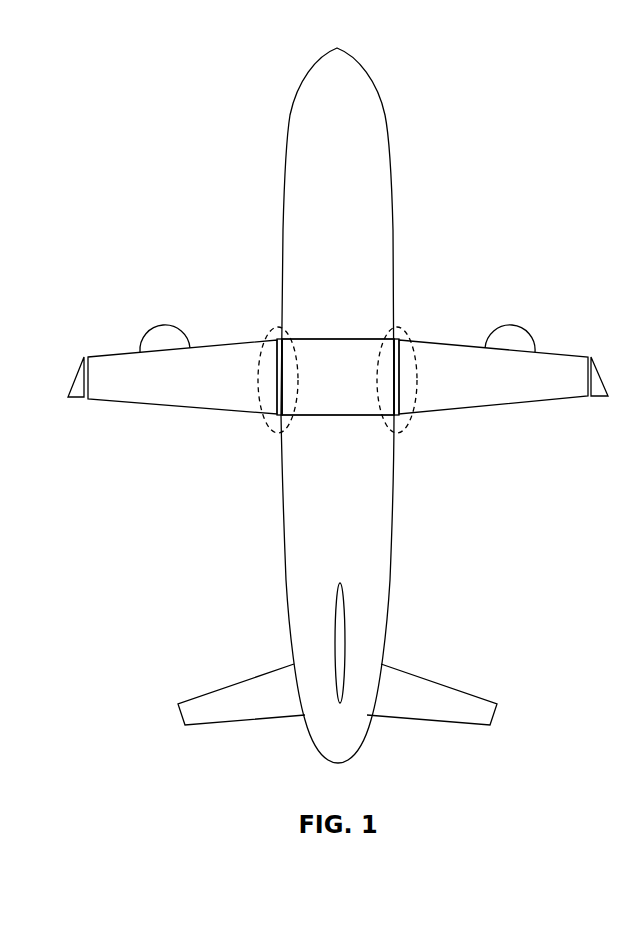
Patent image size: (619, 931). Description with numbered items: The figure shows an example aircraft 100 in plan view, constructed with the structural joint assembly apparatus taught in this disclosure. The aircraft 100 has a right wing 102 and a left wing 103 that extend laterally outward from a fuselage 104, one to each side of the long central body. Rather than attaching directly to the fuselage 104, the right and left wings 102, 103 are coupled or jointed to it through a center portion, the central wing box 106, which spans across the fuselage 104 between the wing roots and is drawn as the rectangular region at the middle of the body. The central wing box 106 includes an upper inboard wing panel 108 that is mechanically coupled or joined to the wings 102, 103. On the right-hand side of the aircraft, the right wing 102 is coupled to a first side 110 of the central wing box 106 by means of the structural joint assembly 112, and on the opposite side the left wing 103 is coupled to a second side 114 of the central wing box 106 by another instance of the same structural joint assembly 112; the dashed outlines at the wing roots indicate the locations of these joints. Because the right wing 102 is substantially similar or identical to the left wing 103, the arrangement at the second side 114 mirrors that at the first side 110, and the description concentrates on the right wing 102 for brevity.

The aircraft 100 is at (465, 159).
The right wing 102 is at (560, 352).
The left wing 103 is at (119, 352).
The fuselage 104 is at (281, 223).
The central wing box 106 is at (337, 338).
The upper inboard wing panel 108 is at (352, 400).
The first side 110 is at (396, 386).
The structural joint assembly 112 is at (262, 405).
The second side 114 is at (280, 366).